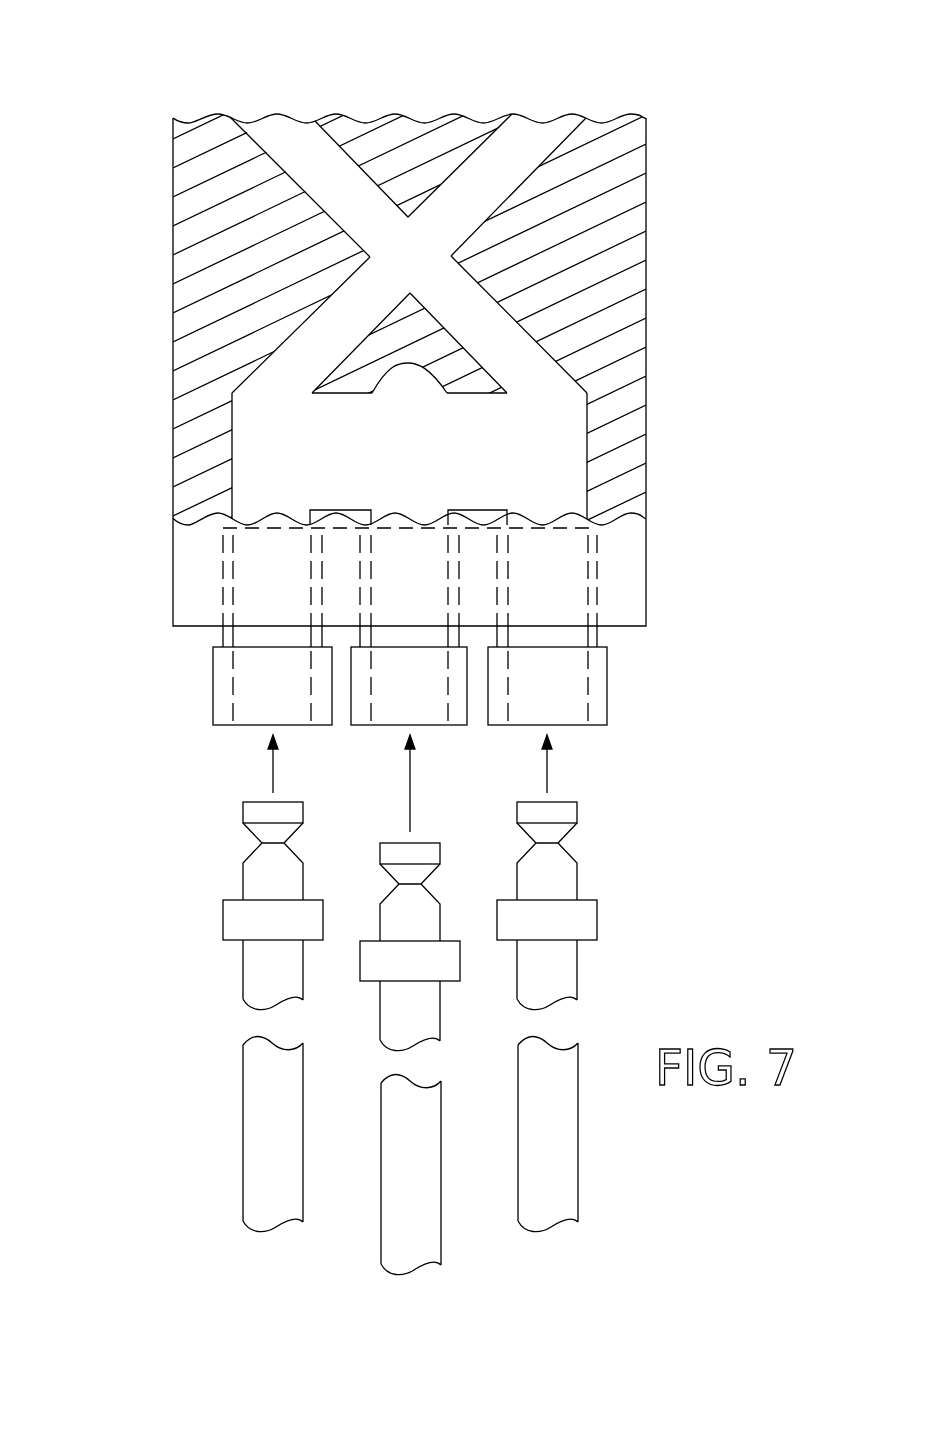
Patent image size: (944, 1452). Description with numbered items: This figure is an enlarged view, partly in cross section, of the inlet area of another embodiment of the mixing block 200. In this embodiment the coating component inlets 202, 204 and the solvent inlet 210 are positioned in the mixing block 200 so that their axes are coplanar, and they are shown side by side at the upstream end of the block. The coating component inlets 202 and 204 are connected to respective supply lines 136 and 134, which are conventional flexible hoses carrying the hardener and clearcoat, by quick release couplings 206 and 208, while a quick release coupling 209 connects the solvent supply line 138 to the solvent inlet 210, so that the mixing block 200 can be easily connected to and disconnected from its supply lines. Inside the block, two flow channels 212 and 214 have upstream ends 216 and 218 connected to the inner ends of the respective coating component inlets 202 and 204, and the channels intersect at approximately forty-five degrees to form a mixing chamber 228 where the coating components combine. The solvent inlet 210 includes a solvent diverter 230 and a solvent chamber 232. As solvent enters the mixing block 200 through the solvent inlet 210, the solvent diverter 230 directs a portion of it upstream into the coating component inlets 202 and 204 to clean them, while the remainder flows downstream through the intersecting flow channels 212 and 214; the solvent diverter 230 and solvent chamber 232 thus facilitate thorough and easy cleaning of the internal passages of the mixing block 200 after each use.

The mixing block 200 is at (243, 31).
The coating component inlet 202 is at (537, 588).
The coating component inlet 204 is at (273, 588).
The quick release coupling 206 is at (615, 675).
The quick release coupling 208 is at (203, 675).
The quick release coupling 209 is at (440, 675).
The solvent inlet 210 is at (398, 548).
The flow channel 212 is at (473, 320).
The flow channel 214 is at (345, 315).
The upstream end of flow channel 216 is at (537, 383).
The upstream end of flow channel 218 is at (282, 383).
The mixing chamber 228 is at (403, 257).
The solvent diverter 230 is at (401, 381).
The solvent chamber 232 is at (408, 452).
The coating line 134 is at (278, 1163).
The coating line 136 is at (547, 1175).
The solvent supply line 138 is at (412, 1241).